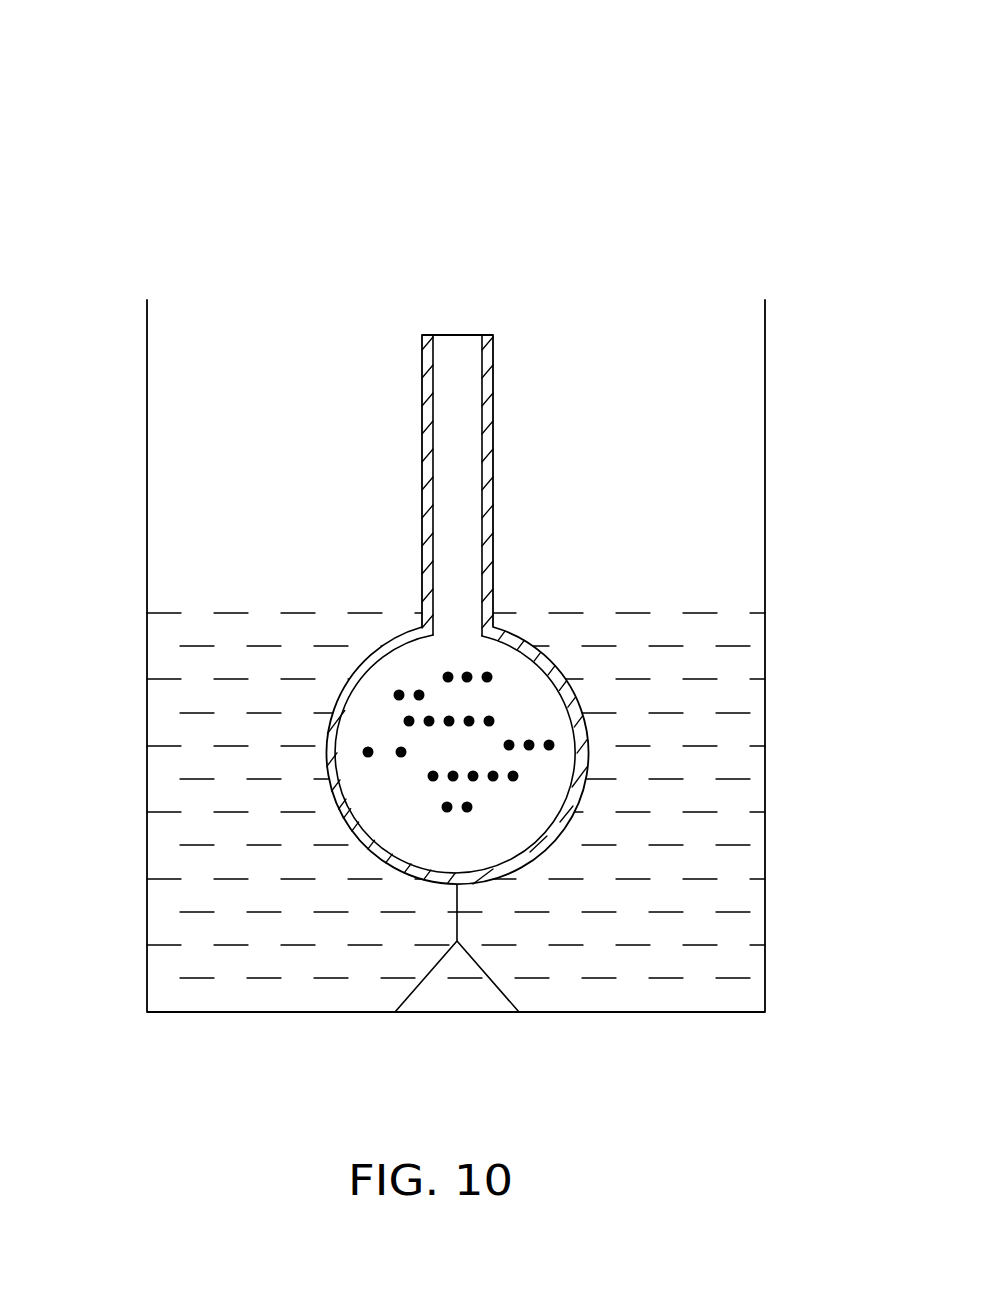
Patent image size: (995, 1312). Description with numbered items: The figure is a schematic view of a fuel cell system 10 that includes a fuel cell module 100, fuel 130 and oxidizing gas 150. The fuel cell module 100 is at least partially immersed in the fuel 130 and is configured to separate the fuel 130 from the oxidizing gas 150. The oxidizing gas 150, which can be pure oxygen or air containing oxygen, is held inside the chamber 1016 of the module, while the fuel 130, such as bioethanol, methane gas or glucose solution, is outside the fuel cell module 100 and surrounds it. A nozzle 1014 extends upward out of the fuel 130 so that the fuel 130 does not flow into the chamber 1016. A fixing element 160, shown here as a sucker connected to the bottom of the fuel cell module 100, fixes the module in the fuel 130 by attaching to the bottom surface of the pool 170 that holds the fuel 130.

The fuel cell system 10 is at (379, 44).
The fuel cell module 100 is at (456, 558).
The nozzle 1014 is at (490, 382).
The chamber 1016 is at (535, 692).
The oxidizing gas 150 is at (398, 694).
The fixing element 160 is at (430, 967).
The pool 170 is at (766, 721).
The fuel 130 is at (666, 780).